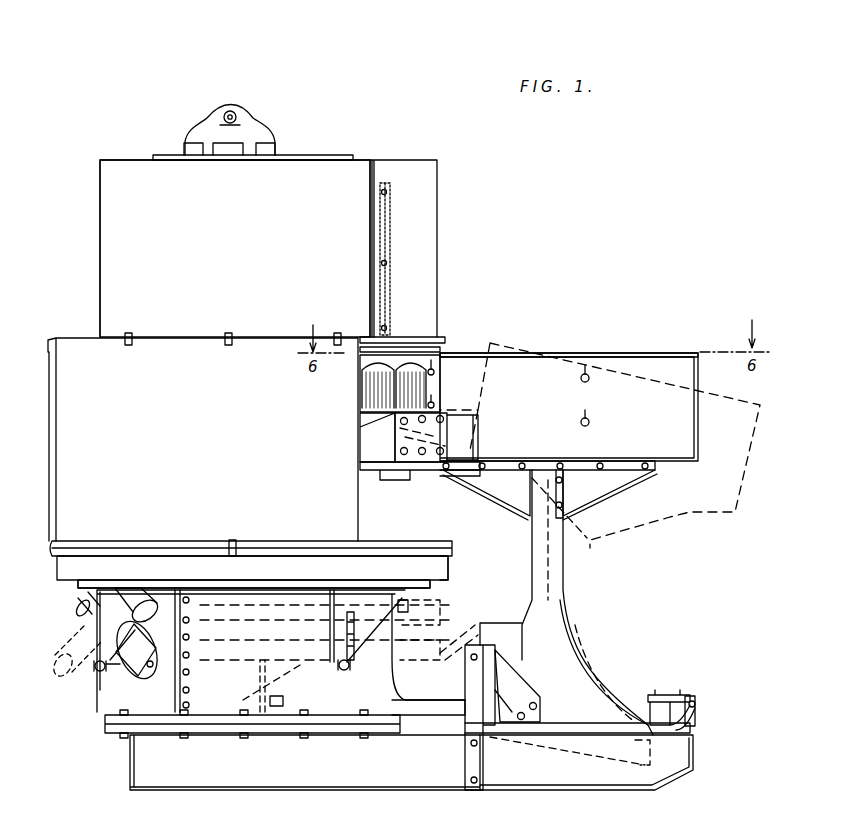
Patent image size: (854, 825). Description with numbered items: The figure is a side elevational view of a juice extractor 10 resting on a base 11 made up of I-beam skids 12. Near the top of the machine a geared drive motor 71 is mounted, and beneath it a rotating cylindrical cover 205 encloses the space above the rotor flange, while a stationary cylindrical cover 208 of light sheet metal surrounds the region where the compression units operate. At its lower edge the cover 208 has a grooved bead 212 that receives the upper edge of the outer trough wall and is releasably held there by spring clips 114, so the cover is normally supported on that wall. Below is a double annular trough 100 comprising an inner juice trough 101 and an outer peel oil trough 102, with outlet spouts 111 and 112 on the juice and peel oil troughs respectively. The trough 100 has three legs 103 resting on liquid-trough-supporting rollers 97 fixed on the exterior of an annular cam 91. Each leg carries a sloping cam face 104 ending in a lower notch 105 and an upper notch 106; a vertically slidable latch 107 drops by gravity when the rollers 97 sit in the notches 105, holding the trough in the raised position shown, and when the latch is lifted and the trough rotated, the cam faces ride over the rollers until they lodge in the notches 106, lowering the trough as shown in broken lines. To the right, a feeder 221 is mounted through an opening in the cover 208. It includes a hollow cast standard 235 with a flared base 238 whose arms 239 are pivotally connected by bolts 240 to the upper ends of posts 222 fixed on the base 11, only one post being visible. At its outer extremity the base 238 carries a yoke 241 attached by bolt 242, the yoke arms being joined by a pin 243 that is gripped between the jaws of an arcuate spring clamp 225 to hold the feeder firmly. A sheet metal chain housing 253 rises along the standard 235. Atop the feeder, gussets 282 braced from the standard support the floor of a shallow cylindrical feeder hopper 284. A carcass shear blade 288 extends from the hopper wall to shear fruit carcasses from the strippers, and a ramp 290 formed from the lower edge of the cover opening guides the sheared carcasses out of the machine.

The juice extractor 10 is at (397, 55).
The geared drive motor 71 is at (262, 134).
The cylindrical cover 205 is at (100, 254).
The stationary cylindrical cover 208 is at (65, 452).
The feeder 221 is at (604, 336).
The feeder hopper 284 is at (632, 362).
The carcass shear blade 288 is at (372, 452).
The ramp 290 is at (362, 478).
The gussets 282 is at (592, 494).
The hollow cast standard 235 is at (568, 592).
The grooved bead 212 is at (52, 548).
The spring clips 114 is at (238, 533).
The double annular trough 100 is at (76, 572).
The outer peel oil trough 102 is at (448, 571).
The inner juice trough 101 is at (432, 584).
The legs 103 is at (333, 616).
The outlet spout 112 is at (136, 580).
The outlet spout 111 is at (90, 602).
The notch 105 is at (338, 667).
The liquid-trough-supporting rollers 97 is at (100, 672).
The annular cam 91 is at (120, 700).
The notch 106 is at (407, 604).
The sloping cam face 104 is at (380, 634).
The vertically slidable latch 107 is at (358, 603).
The sheet metal chain housing 253 is at (446, 660).
The bolts 240 is at (473, 650).
The posts 222 is at (477, 714).
The arms 239 is at (517, 681).
The flared base 238 is at (608, 697).
The yoke 241 is at (658, 697).
The arcuate spring clamp 225 is at (705, 701).
The pin 243 is at (692, 706).
The base 11 is at (360, 782).
The I-beam skids 12 is at (530, 781).
The bolt 242 is at (655, 735).